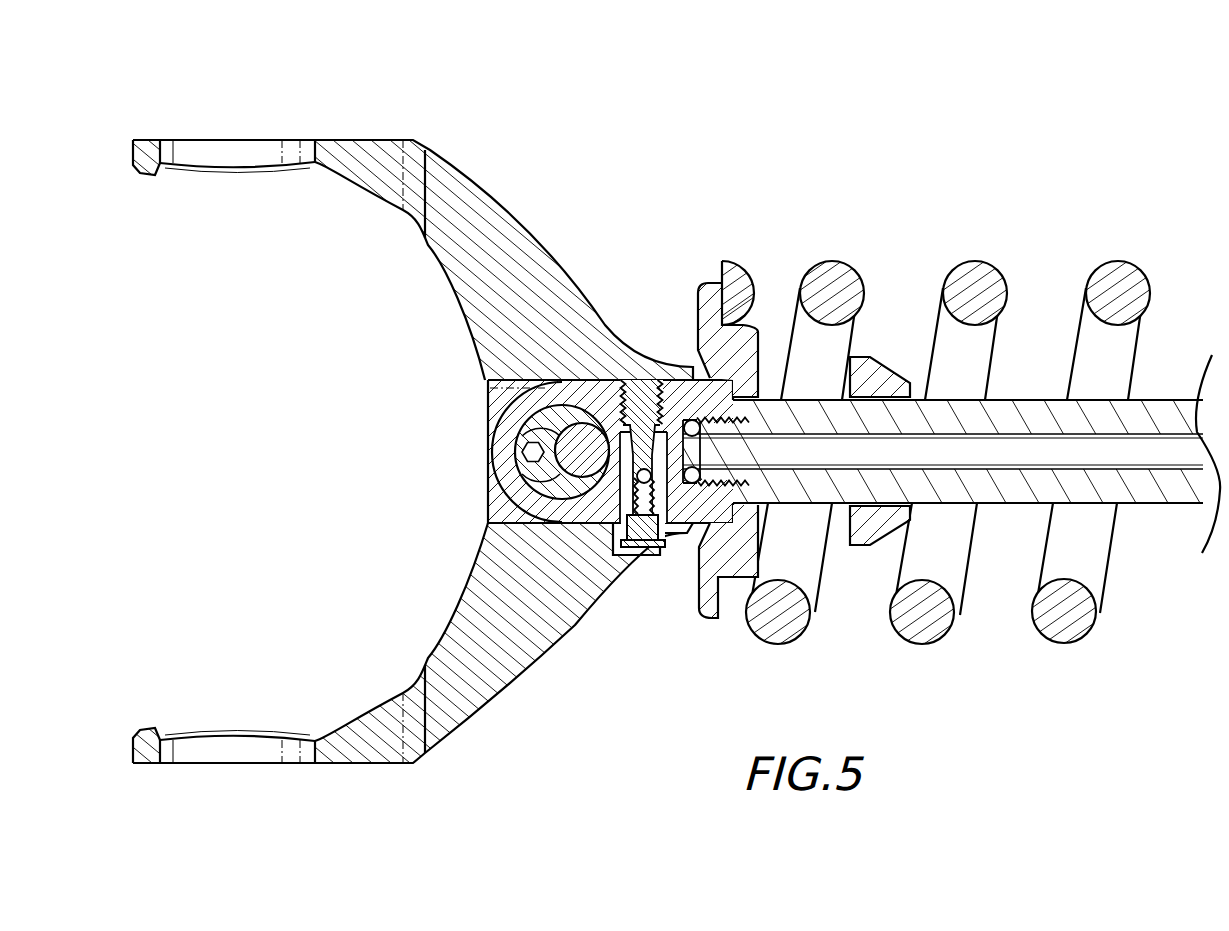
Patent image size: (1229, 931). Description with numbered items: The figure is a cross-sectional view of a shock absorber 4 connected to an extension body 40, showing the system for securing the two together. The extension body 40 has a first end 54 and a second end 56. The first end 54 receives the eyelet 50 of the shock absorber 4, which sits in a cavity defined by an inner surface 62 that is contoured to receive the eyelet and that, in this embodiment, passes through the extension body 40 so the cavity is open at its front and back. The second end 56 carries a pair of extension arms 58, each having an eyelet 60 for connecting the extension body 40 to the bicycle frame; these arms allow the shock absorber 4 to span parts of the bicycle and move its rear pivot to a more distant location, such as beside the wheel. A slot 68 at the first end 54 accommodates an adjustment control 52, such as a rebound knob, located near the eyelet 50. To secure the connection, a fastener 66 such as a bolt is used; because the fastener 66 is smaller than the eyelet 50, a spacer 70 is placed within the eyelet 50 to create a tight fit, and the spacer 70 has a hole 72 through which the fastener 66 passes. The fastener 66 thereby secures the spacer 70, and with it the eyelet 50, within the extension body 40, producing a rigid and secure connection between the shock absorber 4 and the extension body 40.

The shock absorber 4 is at (1062, 245).
The extension body 40 is at (486, 144).
The eyelet 50 is at (508, 478).
The adjustment control 52 is at (648, 545).
The first end 54 is at (645, 313).
The second end 56 is at (379, 115).
The extension arm 58 is at (490, 228).
The eyelet 60 is at (209, 166).
The inner surface 62 is at (502, 401).
The fastener 66 is at (583, 460).
The slot 68 is at (630, 550).
The spacer 70 is at (507, 508).
The hole 72 is at (495, 448).